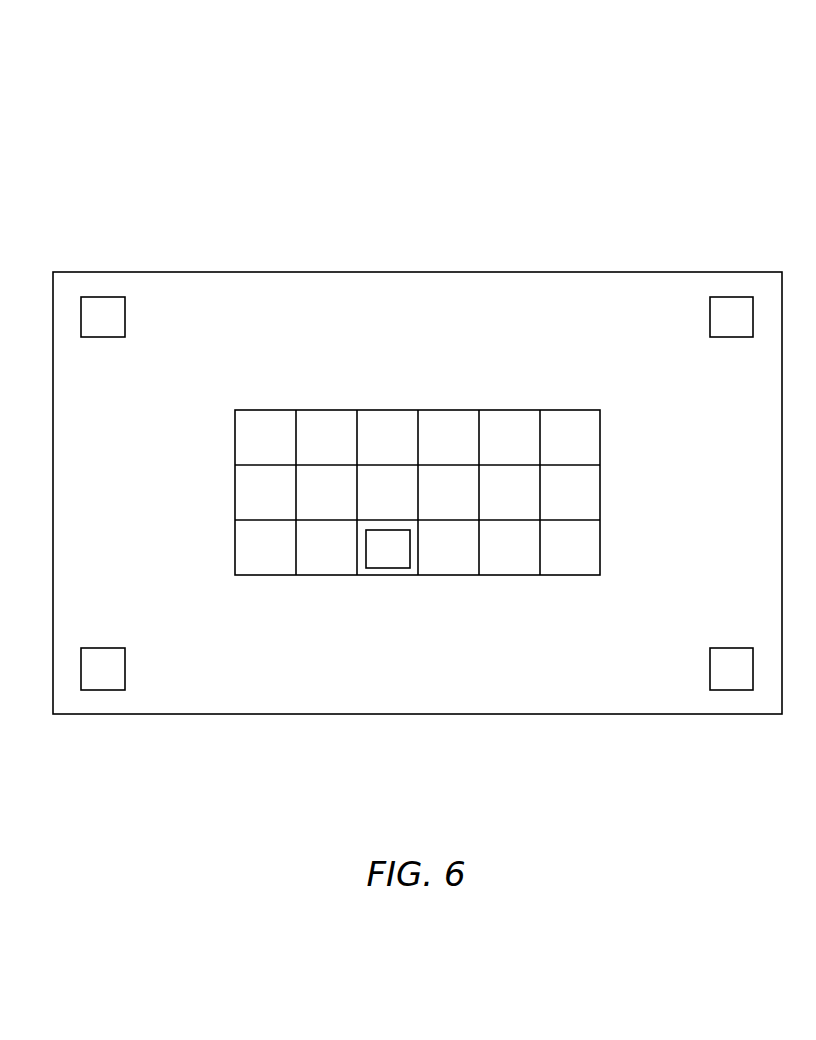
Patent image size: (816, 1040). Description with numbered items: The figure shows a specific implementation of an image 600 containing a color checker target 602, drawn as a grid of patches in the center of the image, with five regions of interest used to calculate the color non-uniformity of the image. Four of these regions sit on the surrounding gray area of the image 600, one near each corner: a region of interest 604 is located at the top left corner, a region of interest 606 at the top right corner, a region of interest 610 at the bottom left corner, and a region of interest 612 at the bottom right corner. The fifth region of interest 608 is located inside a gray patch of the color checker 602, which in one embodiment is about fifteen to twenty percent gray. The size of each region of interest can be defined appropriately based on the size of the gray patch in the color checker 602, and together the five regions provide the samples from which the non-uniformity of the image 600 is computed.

The image 600 is at (118, 104).
The color checker target 602 is at (486, 377).
The region of interest 604 is at (126, 316).
The region of interest 606 is at (709, 318).
The region of interest 608 is at (395, 569).
The region of interest 610 is at (126, 660).
The region of interest 612 is at (709, 664).